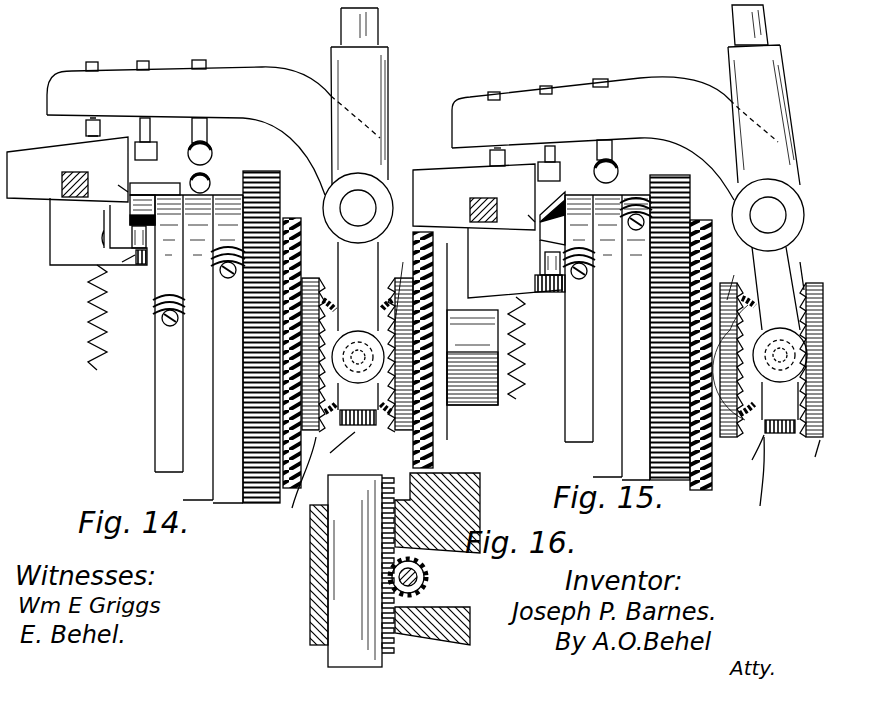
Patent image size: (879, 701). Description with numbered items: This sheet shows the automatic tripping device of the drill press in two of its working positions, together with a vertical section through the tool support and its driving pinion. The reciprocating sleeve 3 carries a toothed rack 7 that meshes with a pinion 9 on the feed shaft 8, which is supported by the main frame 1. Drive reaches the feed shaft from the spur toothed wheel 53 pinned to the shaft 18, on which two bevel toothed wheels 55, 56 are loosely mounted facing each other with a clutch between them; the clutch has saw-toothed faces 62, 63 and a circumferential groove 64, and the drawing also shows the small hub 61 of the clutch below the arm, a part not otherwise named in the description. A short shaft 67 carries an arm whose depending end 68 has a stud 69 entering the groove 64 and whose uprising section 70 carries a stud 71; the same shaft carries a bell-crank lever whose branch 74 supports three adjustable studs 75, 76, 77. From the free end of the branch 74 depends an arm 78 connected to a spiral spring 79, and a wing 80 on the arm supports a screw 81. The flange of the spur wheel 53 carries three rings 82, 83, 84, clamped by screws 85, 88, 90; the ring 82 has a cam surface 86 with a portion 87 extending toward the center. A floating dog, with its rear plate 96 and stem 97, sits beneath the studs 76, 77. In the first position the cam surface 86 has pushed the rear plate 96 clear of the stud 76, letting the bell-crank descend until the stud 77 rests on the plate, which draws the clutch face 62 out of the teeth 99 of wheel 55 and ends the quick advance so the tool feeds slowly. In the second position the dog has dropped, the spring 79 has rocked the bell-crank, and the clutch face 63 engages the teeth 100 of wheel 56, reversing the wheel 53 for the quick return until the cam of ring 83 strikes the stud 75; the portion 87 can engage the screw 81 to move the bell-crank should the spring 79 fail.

In FIG. 16, the main frame 1 is at (437, 559).
In FIG. 16, the reciprocating sleeve 3 is at (346, 571).
In FIG. 16, the toothed rack 7 is at (393, 564).
In FIG. 16, the feed shaft 8 is at (418, 578).
In FIG. 16, the pinion 9 is at (415, 575).
In FIG. 14, the shaft 18 is at (367, 327).
In FIG. 15, the shaft 18 is at (734, 338).
In FIG. 14, the spur toothed wheel 53 is at (261, 326).
In FIG. 15, the spur toothed wheel 53 is at (670, 316).
In FIG. 14, the bevel toothed wheel 55 is at (293, 342).
In FIG. 15, the bevel toothed wheel 55 is at (702, 345).
In FIG. 15, the bevel toothed wheel 56 is at (635, 358).
In FIG. 14, the pinion hub 61 is at (360, 428).
In FIG. 15, the pinion hub 61 is at (780, 435).
In FIG. 14, the saw-toothed face 62 is at (336, 452).
In FIG. 15, the saw-toothed face 62 is at (748, 457).
In FIG. 14, the saw-toothed face 63 is at (406, 436).
In FIG. 15, the saw-toothed face 63 is at (806, 442).
In FIG. 14, the circumferential groove 64 is at (292, 480).
In FIG. 15, the circumferential groove 64 is at (757, 479).
In FIG. 14, the short shaft 67 is at (358, 208).
In FIG. 15, the short shaft 67 is at (768, 215).
In FIG. 14, the depending end of arm 68 is at (358, 286).
In FIG. 15, the depending end of arm 68 is at (776, 288).
In FIG. 14, the stud 69 is at (358, 357).
In FIG. 15, the stud 69 is at (780, 355).
In FIG. 14, the uprising section 70 is at (359, 116).
In FIG. 15, the uprising section 70 is at (764, 115).
In FIG. 14, the stud 71 is at (371, 26).
In FIG. 15, the stud 71 is at (733, 25).
In FIG. 14, the branch of bell-crank lever 74 is at (213, 127).
In FIG. 15, the branch of bell-crank lever 74 is at (615, 138).
In FIG. 14, the stud 75 is at (207, 141).
In FIG. 15, the stud 75 is at (614, 159).
In FIG. 14, the stud 76 is at (154, 139).
In FIG. 15, the stud 76 is at (559, 162).
In FIG. 14, the stud 77 is at (77, 127).
In FIG. 15, the stud 77 is at (483, 156).
In FIG. 14, the arm 78 is at (98, 231).
In FIG. 15, the arm 78 is at (515, 263).
In FIG. 14, the spiral spring 79 is at (83, 317).
In FIG. 15, the spiral spring 79 is at (528, 348).
In FIG. 14, the wing 80 is at (123, 272).
In FIG. 15, the wing 80 is at (546, 294).
In FIG. 14, the screw 81 is at (125, 238).
In FIG. 15, the screw 81 is at (540, 263).
In FIG. 14, the ring 82 is at (186, 333).
In FIG. 15, the ring 82 is at (607, 318).
In FIG. 14, the ring 83 is at (198, 347).
In FIG. 15, the ring 83 is at (607, 336).
In FIG. 14, the ring 84 is at (228, 349).
In FIG. 15, the ring 84 is at (636, 337).
In FIG. 14, the screw 85 is at (162, 318).
In FIG. 15, the screw 85 is at (579, 280).
In FIG. 14, the cam surface 86 is at (155, 195).
In FIG. 15, the cam surface 86 is at (552, 215).
In FIG. 14, the portion of cam surface 87 is at (111, 183).
In FIG. 15, the portion of cam surface 87 is at (520, 217).
In FIG. 14, the screw 88 is at (200, 176).
In FIG. 14, the screw 90 is at (228, 273).
In FIG. 15, the screw 90 is at (636, 226).
In FIG. 14, the rear plate 96 is at (67, 169).
In FIG. 15, the rear plate 96 is at (474, 197).
In FIG. 14, the stem 97 is at (75, 174).
In FIG. 15, the stem 97 is at (483, 200).
In FIG. 14, the teeth 99 is at (312, 344).
In FIG. 15, the teeth 99 is at (725, 368).
In FIG. 14, the teeth 100 is at (414, 446).
In FIG. 15, the teeth 100 is at (816, 267).